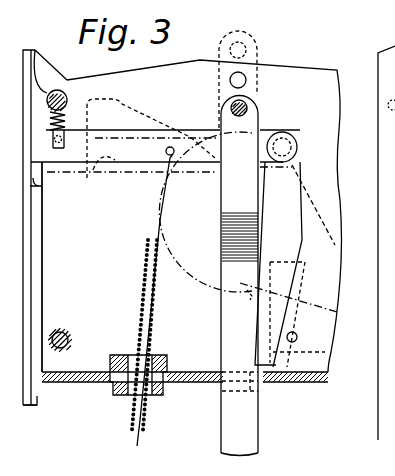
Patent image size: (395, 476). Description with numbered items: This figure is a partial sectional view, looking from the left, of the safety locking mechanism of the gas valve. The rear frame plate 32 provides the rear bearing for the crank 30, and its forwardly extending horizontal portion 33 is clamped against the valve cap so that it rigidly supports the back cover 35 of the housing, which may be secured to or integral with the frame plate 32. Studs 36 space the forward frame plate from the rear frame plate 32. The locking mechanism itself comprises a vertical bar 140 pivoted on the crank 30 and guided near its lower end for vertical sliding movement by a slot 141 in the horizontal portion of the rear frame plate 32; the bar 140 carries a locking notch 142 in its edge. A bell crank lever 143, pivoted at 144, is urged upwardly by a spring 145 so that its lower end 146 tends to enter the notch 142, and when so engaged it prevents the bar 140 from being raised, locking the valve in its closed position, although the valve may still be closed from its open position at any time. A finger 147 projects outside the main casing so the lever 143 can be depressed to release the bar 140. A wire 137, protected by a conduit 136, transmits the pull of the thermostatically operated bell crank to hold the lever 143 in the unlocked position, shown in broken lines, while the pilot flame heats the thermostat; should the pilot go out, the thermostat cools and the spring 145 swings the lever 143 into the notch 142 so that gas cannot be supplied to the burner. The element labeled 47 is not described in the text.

The crank 30 is at (246, 102).
The rear frame plate 32 is at (60, 267).
The forwardly extending horizontal portion 33 is at (290, 385).
The back cover 35 is at (85, 383).
The studs 36 is at (66, 96).
The latch 47 is at (105, 117).
The conduit 136 is at (141, 296).
The wire 137 is at (158, 224).
The vertical bar 140 is at (221, 316).
The slot 141 is at (216, 388).
The locking notch 142 is at (253, 352).
The bell crank lever 143 is at (182, 121).
The pivot 144 is at (285, 140).
The spring 145 is at (54, 88).
The lower end of lever 146 is at (293, 352).
The finger 147 is at (33, 186).